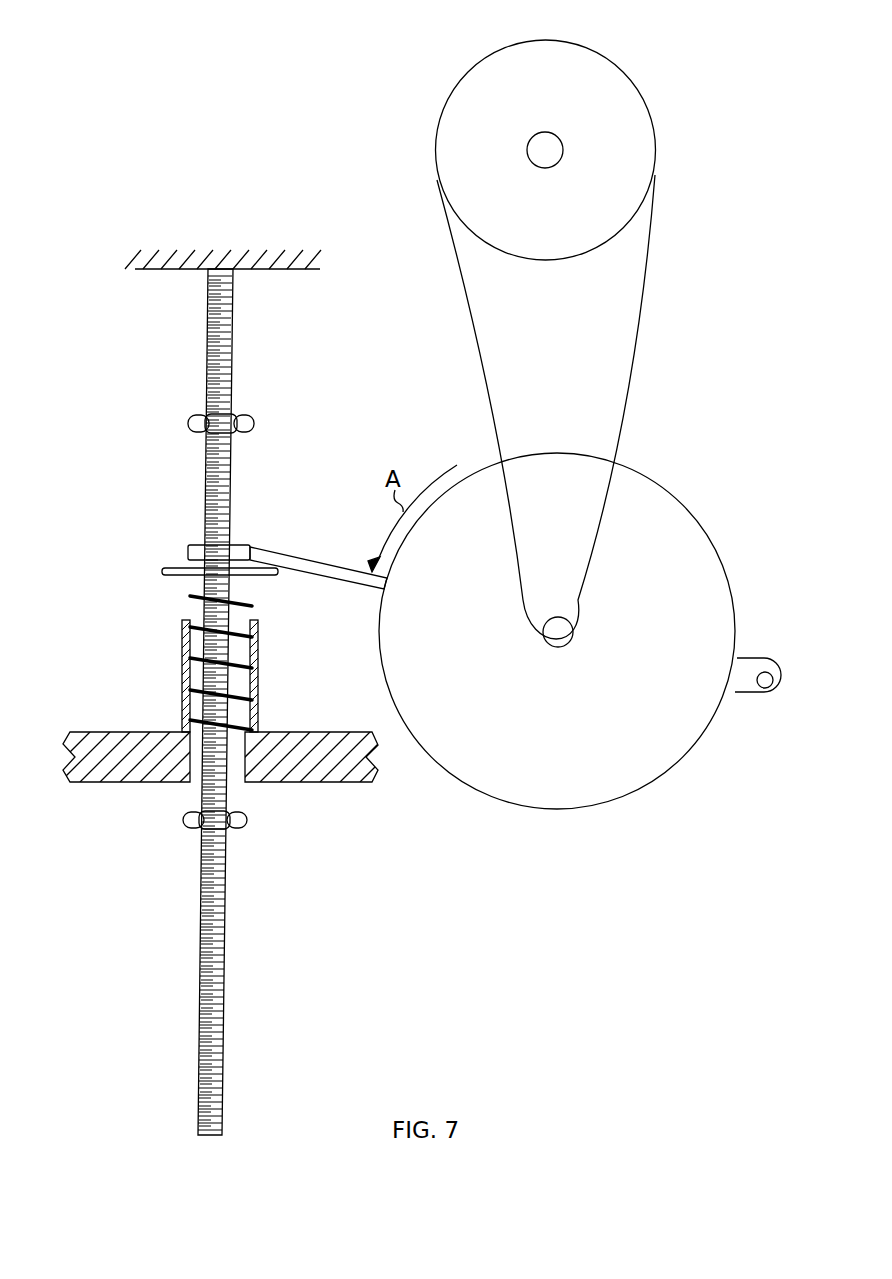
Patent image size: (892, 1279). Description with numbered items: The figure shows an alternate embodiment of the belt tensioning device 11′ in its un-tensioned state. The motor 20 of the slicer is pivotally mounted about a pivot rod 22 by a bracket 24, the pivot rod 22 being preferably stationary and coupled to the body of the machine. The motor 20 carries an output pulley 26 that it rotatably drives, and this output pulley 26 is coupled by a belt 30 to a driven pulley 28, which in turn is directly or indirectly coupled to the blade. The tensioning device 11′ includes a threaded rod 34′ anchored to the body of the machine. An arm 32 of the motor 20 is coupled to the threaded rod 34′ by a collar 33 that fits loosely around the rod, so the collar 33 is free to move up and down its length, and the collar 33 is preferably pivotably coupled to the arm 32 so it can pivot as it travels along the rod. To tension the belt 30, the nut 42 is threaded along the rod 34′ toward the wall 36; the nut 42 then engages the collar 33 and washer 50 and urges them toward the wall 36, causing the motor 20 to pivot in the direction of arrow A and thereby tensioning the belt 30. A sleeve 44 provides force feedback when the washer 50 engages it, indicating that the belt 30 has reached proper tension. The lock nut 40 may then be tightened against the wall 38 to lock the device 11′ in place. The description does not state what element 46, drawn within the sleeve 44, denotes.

The belt tensioning device 11′ is at (121, 500).
The motor 20 is at (562, 808).
The pivot rod 22 is at (758, 692).
The bracket 24 is at (765, 658).
The output pulley 26 is at (570, 630).
The driven pulley 28 is at (641, 138).
The belt 30 is at (637, 343).
The arm 32 is at (307, 566).
The collar 33 is at (190, 553).
The threaded rod 34′ is at (233, 353).
The wall 36 is at (204, 757).
The wall 38 is at (300, 770).
The lock nut 40 is at (188, 829).
The nut 42 is at (244, 426).
The sleeve 44 is at (259, 675).
The spring 46 is at (195, 697).
The washer 50 is at (164, 572).